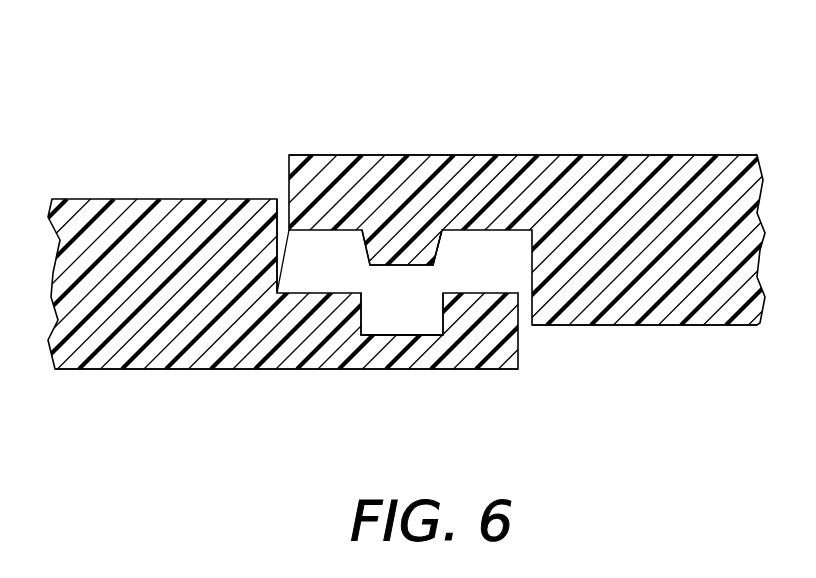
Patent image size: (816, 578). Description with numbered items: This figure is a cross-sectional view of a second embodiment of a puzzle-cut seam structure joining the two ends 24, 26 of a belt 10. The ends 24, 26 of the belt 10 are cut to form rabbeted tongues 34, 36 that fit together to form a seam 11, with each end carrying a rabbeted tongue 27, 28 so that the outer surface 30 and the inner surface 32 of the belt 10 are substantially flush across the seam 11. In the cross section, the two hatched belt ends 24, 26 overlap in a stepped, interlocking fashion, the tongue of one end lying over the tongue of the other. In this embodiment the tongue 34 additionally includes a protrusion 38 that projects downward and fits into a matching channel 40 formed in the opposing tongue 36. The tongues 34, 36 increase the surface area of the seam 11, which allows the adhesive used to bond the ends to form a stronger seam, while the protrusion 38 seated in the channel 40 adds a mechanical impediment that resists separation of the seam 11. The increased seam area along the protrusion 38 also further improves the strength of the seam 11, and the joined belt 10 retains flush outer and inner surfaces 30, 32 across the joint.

The belt 10 is at (408, 234).
The seam 11 is at (271, 181).
The end of belt 24 is at (444, 224).
The end of belt 26 is at (357, 328).
The rabbeted tongue 27 is at (417, 155).
The rabbeted tongue 28 is at (349, 372).
The outer surface 30 is at (707, 153).
The inner surface 32 is at (707, 327).
The rabbeted tongue 34 is at (457, 157).
The rabbeted tongue 36 is at (320, 359).
The protrusion 38 is at (437, 248).
The channel 40 is at (403, 335).